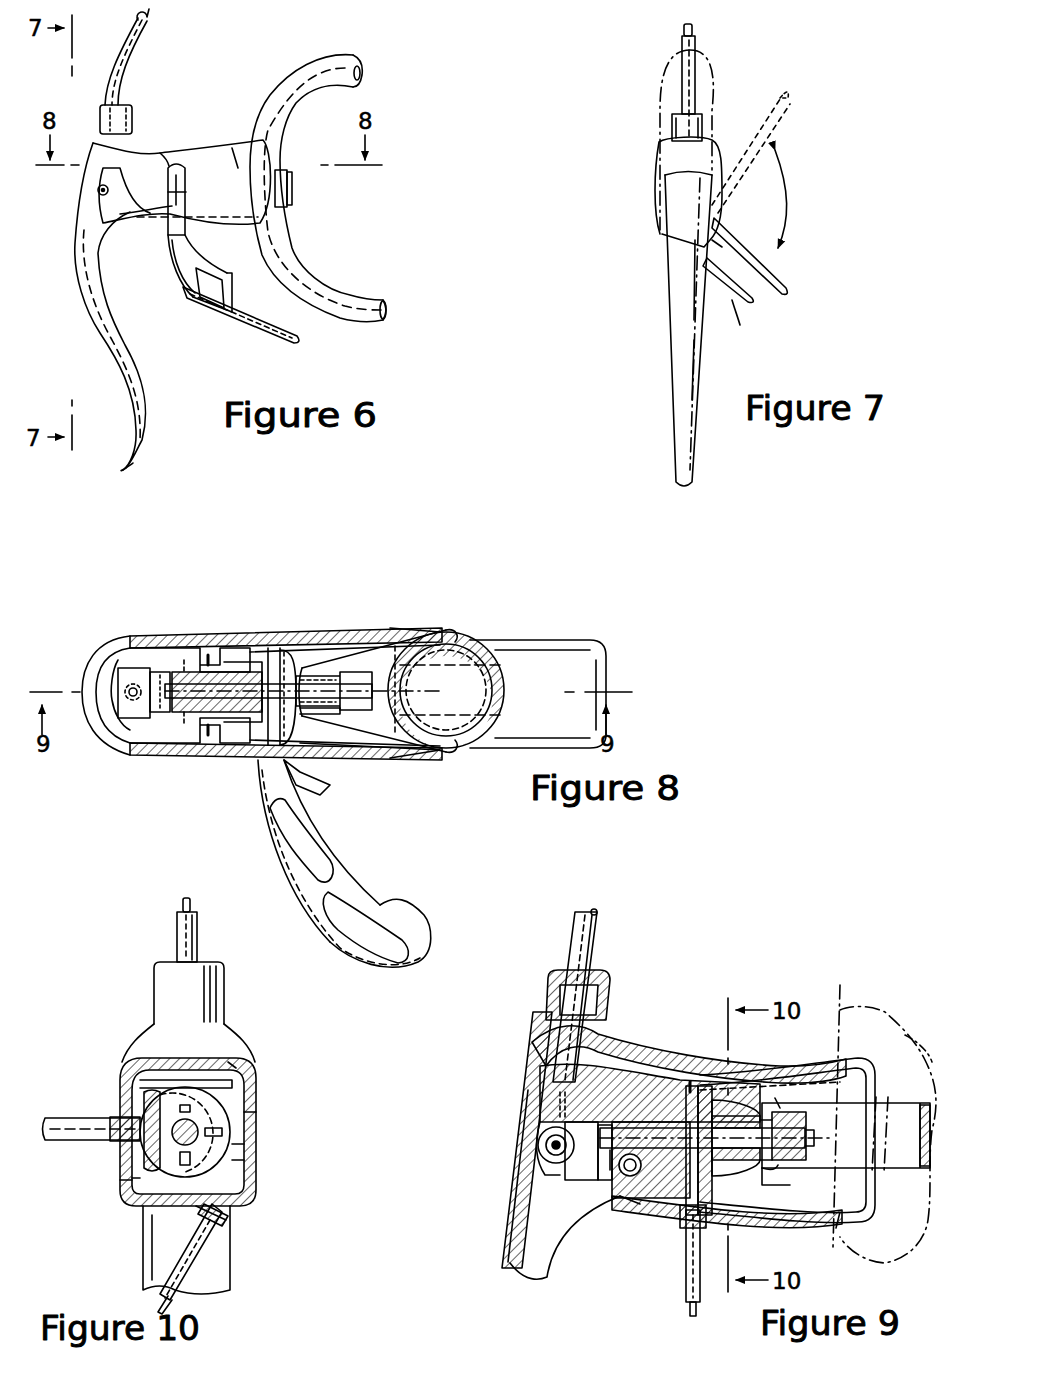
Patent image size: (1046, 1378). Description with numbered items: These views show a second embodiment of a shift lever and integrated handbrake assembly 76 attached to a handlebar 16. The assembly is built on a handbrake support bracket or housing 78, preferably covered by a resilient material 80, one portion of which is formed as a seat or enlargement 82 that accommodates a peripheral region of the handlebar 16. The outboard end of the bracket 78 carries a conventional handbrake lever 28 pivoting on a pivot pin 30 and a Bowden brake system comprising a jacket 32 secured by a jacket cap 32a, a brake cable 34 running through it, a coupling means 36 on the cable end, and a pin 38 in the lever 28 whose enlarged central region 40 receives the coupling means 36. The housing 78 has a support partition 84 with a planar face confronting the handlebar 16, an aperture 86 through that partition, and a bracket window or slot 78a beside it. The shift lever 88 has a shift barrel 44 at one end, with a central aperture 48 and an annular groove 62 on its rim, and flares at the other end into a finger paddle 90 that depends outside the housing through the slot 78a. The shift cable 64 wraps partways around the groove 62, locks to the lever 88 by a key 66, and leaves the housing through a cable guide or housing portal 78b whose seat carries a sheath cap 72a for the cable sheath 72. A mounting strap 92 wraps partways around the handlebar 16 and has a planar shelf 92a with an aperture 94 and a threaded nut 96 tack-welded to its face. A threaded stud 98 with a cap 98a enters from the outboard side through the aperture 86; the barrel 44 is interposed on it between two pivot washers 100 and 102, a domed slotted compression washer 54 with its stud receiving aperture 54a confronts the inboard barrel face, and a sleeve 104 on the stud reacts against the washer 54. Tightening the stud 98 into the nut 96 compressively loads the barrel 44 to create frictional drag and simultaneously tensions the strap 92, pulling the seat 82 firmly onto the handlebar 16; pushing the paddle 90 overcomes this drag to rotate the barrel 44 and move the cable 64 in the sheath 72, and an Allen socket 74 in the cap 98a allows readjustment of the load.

In FIG. 6, the handlebar 16 is at (298, 72).
In FIG. 7, the handlebar 16 is at (662, 94).
In FIG. 8, the handlebar 16 is at (524, 664).
In FIG. 9, the handlebar 16 is at (846, 1018).
In FIG. 6, the handbrake lever 28 is at (136, 388).
In FIG. 7, the handbrake lever 28 is at (686, 385).
In FIG. 8, the handbrake lever 28 is at (104, 680).
In FIG. 10, the handbrake lever 28 is at (232, 1252).
In FIG. 9, the handbrake lever 28 is at (510, 1196).
In FIG. 9, the pivot pin 30 is at (615, 1206).
In FIG. 6, the outer sheath or jacket 32 is at (135, 62).
In FIG. 7, the outer sheath or jacket 32 is at (692, 46).
In FIG. 10, the outer sheath or jacket 32 is at (180, 936).
In FIG. 9, the outer sheath or jacket 32 is at (588, 950).
In FIG. 6, the jacket cap 32a is at (100, 102).
In FIG. 7, the jacket cap 32a is at (690, 130).
In FIG. 10, the jacket cap 32a is at (165, 992).
In FIG. 9, the jacket cap 32a is at (548, 1000).
In FIG. 6, the brake cable 34 is at (149, 18).
In FIG. 7, the brake cable 34 is at (683, 27).
In FIG. 8, the brake cable 34 is at (130, 696).
In FIG. 10, the brake cable 34 is at (184, 906).
In FIG. 9, the brake cable 34 is at (556, 1120).
In FIG. 8, the coupling means 36 is at (116, 660).
In FIG. 9, the coupling means 36 is at (538, 1142).
In FIG. 6, the pin 38 is at (96, 190).
In FIG. 8, the pin 38 is at (133, 700).
In FIG. 9, the pin 38 is at (546, 1140).
In FIG. 8, the enlarged central region 40 is at (112, 672).
In FIG. 9, the enlarged central region 40 is at (545, 1162).
In FIG. 6, the shift barrel 44 is at (212, 222).
In FIG. 8, the shift barrel 44 is at (292, 650).
In FIG. 10, the shift barrel 44 is at (142, 1108).
In FIG. 9, the shift barrel 44 is at (692, 1086).
In FIG. 8, the central bore or aperture 48 is at (212, 640).
In FIG. 9, the central bore or aperture 48 is at (680, 1085).
In FIG. 8, the compression washer 54 is at (304, 630).
In FIG. 10, the compression washer 54 is at (142, 1078).
In FIG. 9, the compression washer 54 is at (716, 1128).
In FIG. 10, the stud receiving aperture 54a is at (236, 1150).
In FIG. 6, the annular groove 62 is at (170, 194).
In FIG. 8, the annular groove 62 is at (238, 648).
In FIG. 10, the annular groove 62 is at (118, 1142).
In FIG. 9, the annular groove 62 is at (716, 1162).
In FIG. 6, the shift cable 64 is at (118, 213).
In FIG. 8, the shift cable 64 is at (292, 648).
In FIG. 10, the shift cable 64 is at (160, 1290).
In FIG. 9, the shift cable 64 is at (690, 1308).
In FIG. 10, the key 66 is at (119, 1204).
In FIG. 6, the cable sheath 72 is at (263, 343).
In FIG. 7, the cable sheath 72 is at (748, 324).
In FIG. 10, the cable sheath 72 is at (190, 1262).
In FIG. 9, the cable sheath 72 is at (703, 1296).
In FIG. 10, the sheath cap 72a is at (215, 1225).
In FIG. 9, the sheath cap 72a is at (684, 1222).
In FIG. 8, the Allen socket 74 is at (124, 646).
In FIG. 6, the shift lever and integrated handbrake assembly 76 is at (190, 133).
In FIG. 7, the shift lever and integrated handbrake assembly 76 is at (640, 185).
In FIG. 8, the shift lever and integrated handbrake assembly 76 is at (320, 618).
In FIG. 10, the shift lever and integrated handbrake assembly 76 is at (260, 1082).
In FIG. 9, the shift lever and integrated handbrake assembly 76 is at (690, 1055).
In FIG. 8, the handbrake support bracket or housing 78 is at (350, 640).
In FIG. 10, the handbrake support bracket or housing 78 is at (240, 1138).
In FIG. 9, the handbrake support bracket or housing 78 is at (754, 1082).
In FIG. 6, the bracket window or slot 78a is at (168, 158).
In FIG. 8, the bracket window or slot 78a is at (295, 778).
In FIG. 10, the bracket window or slot 78a is at (124, 1182).
In FIG. 10, the cable guide or housing portal 78b is at (232, 1212).
In FIG. 9, the cable guide or housing portal 78b is at (770, 1222).
In FIG. 6, the resilient material 80 is at (232, 162).
In FIG. 7, the resilient material 80 is at (660, 195).
In FIG. 8, the resilient material 80 is at (218, 640).
In FIG. 10, the resilient material 80 is at (242, 1166).
In FIG. 9, the resilient material 80 is at (660, 1062).
In FIG. 8, the seat or enlargement 82 is at (452, 632).
In FIG. 9, the seat or enlargement 82 is at (816, 1066).
In FIG. 8, the support partition 84 is at (226, 715).
In FIG. 10, the support partition 84 is at (228, 1094).
In FIG. 9, the support partition 84 is at (632, 1200).
In FIG. 8, the aperture 86 is at (192, 728).
In FIG. 9, the aperture 86 is at (600, 1198).
In FIG. 6, the shift lever 88 is at (170, 229).
In FIG. 7, the shift lever 88 is at (714, 240).
In FIG. 8, the shift lever 88 is at (268, 765).
In FIG. 10, the shift lever 88 is at (92, 1118).
In FIG. 6, the finger paddle 90 is at (188, 282).
In FIG. 7, the finger paddle 90 is at (776, 98).
In FIG. 8, the finger paddle 90 is at (386, 898).
In FIG. 6, the mounting strap 92 is at (295, 196).
In FIG. 8, the mounting strap 92 is at (470, 660).
In FIG. 9, the mounting strap 92 is at (876, 1128).
In FIG. 8, the planar shelf 92a is at (330, 680).
In FIG. 9, the planar shelf 92a is at (808, 1158).
In FIG. 8, the aperture 94 is at (382, 760).
In FIG. 9, the aperture 94 is at (810, 1130).
In FIG. 8, the threaded nut 96 is at (398, 708).
In FIG. 9, the threaded nut 96 is at (776, 1175).
In FIG. 8, the threaded stud 98 is at (384, 672).
In FIG. 10, the threaded stud 98 is at (236, 1066).
In FIG. 9, the threaded stud 98 is at (782, 1098).
In FIG. 8, the cap or head 98a is at (162, 710).
In FIG. 9, the cap or head 98a is at (598, 1155).
In FIG. 8, the pivot washer 100 is at (268, 645).
In FIG. 9, the pivot washer 100 is at (686, 1200).
In FIG. 8, the pivot washer 102 is at (308, 755).
In FIG. 10, the pivot washer 102 is at (258, 1113).
In FIG. 9, the pivot washer 102 is at (730, 1082).
In FIG. 8, the sleeve 104 is at (317, 722).
In FIG. 9, the sleeve 104 is at (800, 1222).